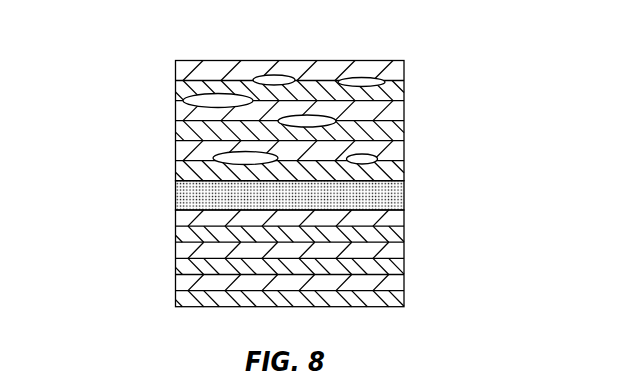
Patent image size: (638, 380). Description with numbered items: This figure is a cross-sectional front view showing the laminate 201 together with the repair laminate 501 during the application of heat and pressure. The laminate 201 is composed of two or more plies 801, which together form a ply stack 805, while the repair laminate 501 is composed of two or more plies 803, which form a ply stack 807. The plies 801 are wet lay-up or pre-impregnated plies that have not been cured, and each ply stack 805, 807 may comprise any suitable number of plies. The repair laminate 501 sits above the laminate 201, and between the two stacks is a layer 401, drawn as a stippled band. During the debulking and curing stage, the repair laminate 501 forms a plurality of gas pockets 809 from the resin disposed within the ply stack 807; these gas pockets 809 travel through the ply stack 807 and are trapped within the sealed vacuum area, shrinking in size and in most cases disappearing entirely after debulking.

The laminate 201 is at (130, 266).
The bonding layer 401 is at (176, 200).
The repair laminate 501 is at (131, 135).
The plies 801 is at (397, 249).
The plies 803 is at (397, 112).
The ply stack 805 is at (490, 210).
The ply stack 807 is at (490, 60).
The gas pockets 809 is at (227, 94).